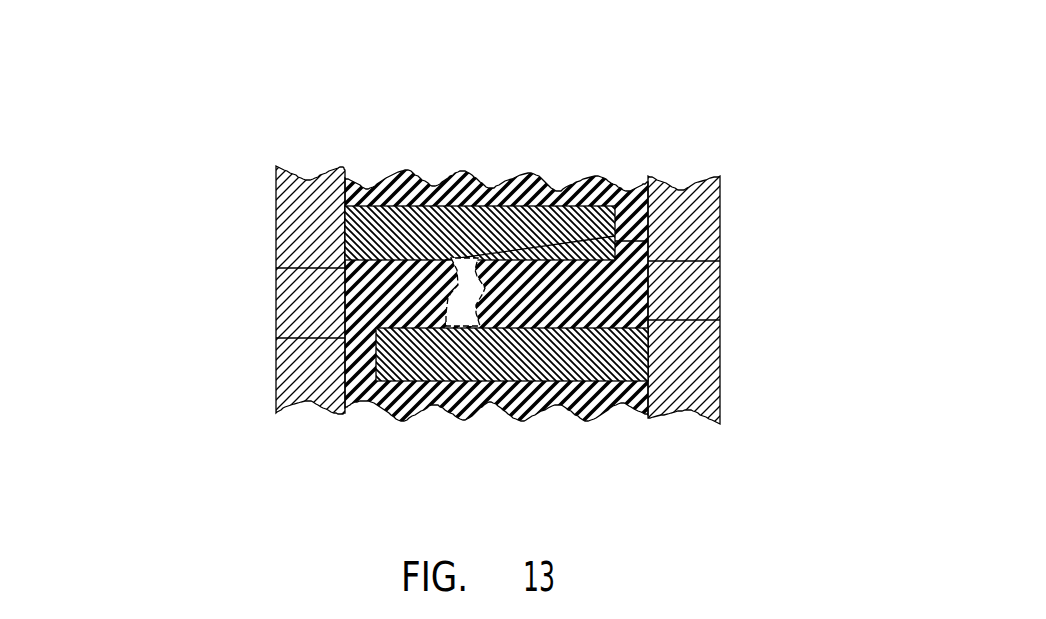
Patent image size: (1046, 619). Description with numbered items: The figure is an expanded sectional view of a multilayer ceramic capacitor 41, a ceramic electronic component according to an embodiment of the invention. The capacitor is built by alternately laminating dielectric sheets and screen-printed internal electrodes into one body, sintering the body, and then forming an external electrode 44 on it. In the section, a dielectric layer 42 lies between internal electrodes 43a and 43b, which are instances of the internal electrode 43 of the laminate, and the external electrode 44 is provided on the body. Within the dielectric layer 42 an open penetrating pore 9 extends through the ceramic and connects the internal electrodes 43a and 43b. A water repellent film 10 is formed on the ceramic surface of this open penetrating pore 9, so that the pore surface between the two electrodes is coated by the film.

The multilayer ceramic capacitor 41 is at (486, 274).
The dielectric layer 42 is at (263, 298).
The internal electrode 43 is at (496, 295).
The internal electrode 43a is at (547, 183).
The internal electrode 43b is at (367, 407).
The external electrode 44 is at (710, 373).
The open penetrating pore 9 is at (710, 253).
The water repellent film 10 is at (267, 259).